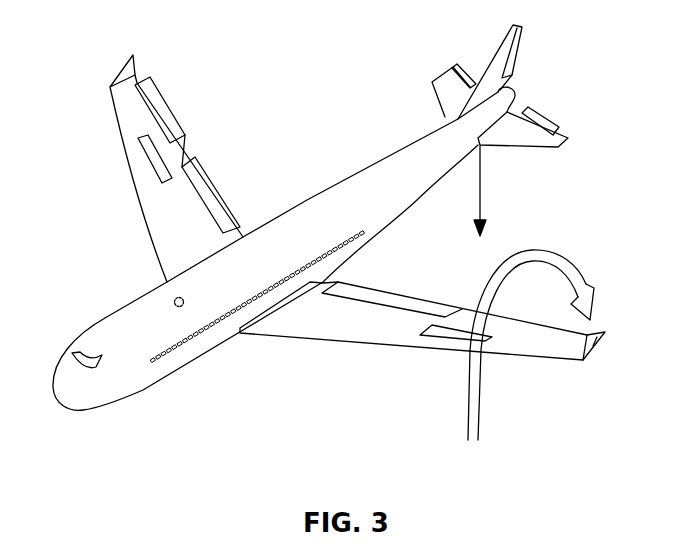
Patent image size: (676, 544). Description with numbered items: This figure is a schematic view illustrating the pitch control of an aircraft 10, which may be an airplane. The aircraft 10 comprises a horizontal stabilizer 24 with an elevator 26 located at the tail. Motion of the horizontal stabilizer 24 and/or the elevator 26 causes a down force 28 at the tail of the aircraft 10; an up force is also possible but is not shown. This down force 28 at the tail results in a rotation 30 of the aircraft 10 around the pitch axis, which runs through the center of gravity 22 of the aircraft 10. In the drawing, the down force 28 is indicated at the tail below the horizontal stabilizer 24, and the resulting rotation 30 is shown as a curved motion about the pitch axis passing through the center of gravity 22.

The aircraft 10 is at (147, 390).
The center of gravity 22 is at (179, 296).
The horizontal stabilizer 24 is at (441, 93).
The elevator 26 is at (549, 116).
The down force 28 is at (483, 183).
The rotation 30 is at (478, 415).